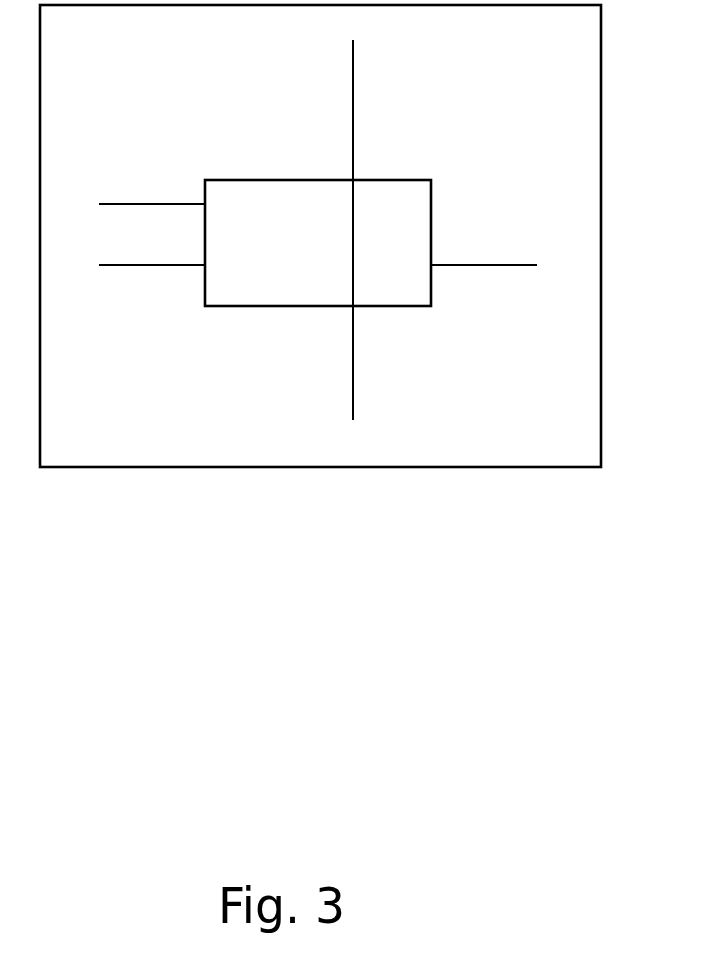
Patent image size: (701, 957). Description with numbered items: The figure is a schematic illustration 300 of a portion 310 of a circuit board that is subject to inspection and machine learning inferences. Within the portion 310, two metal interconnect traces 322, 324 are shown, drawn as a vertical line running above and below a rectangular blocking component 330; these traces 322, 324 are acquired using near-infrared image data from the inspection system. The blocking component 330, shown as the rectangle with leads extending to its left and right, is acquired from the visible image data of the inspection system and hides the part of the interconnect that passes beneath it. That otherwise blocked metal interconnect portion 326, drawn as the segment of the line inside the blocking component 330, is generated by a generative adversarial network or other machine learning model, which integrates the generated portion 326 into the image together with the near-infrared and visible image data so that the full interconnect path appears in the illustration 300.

The schematic illustration 300 is at (320, 272).
The portion of a circuit board 310 is at (133, 55).
The metal interconnect trace 322 is at (353, 135).
The metal interconnect trace 324 is at (353, 327).
The otherwise blocked metal interconnect portion 326 is at (353, 211).
The blocking component 330 is at (291, 230).